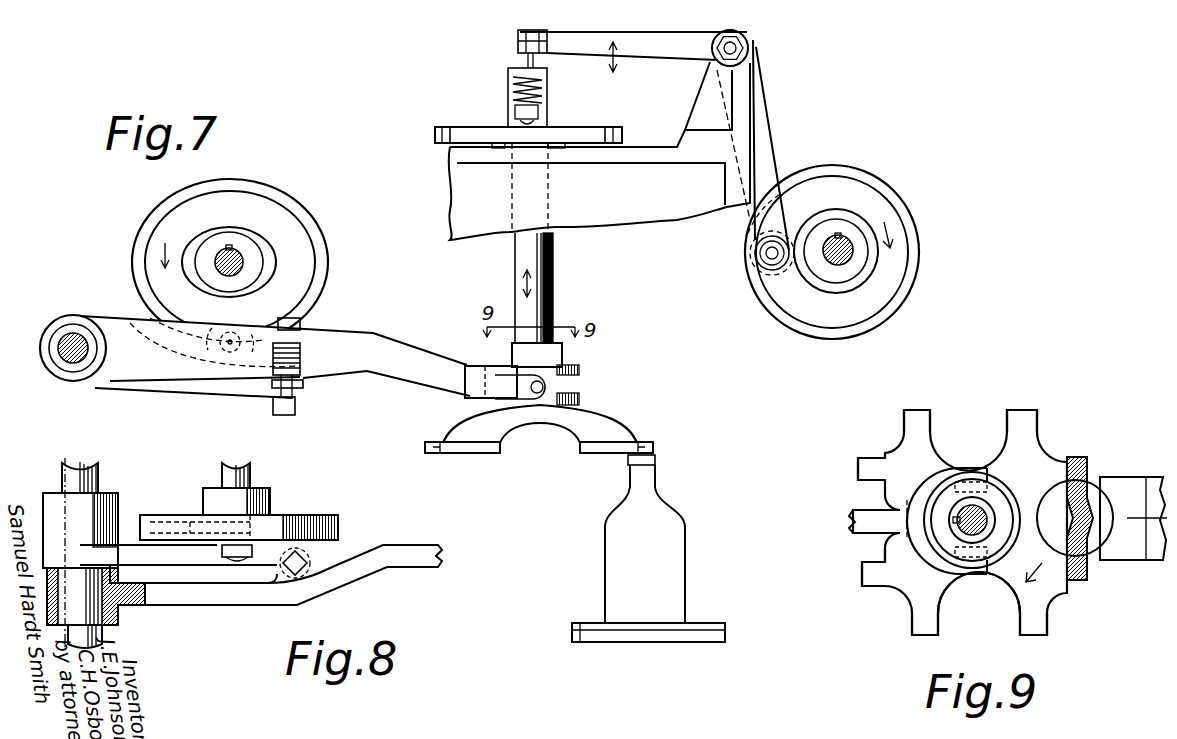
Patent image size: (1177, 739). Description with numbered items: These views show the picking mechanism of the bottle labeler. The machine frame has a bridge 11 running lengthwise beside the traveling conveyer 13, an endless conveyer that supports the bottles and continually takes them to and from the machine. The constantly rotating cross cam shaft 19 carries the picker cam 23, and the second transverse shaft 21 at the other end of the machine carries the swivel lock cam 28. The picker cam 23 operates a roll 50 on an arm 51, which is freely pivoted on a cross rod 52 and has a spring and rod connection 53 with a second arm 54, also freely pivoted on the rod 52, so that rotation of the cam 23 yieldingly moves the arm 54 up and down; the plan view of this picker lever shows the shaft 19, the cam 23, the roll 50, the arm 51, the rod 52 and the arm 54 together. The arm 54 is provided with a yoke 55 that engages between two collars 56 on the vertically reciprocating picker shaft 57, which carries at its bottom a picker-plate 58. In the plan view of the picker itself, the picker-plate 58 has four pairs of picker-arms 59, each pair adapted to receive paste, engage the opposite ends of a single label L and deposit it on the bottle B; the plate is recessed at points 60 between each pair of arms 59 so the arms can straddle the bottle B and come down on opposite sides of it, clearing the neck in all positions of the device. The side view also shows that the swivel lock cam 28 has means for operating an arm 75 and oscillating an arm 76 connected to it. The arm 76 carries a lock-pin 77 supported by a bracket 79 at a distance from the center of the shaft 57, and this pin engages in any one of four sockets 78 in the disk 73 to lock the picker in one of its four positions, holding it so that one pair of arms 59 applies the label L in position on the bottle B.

In FIG. 7, the bridge 11 is at (460, 197).
In FIG. 7, the traveling conveyer 13 is at (630, 640).
In FIG. 9, the traveling conveyer 13 is at (1096, 560).
In FIG. 7, the cross cam shaft 19 is at (243, 257).
In FIG. 8, the cross cam shaft 19 is at (250, 472).
In FIG. 7, the second transverse shaft 21 is at (852, 258).
In FIG. 7, the picker cam 23 is at (309, 227).
In FIG. 8, the picker cam 23 is at (302, 516).
In FIG. 7, the swivel lock cam 28 is at (892, 310).
In FIG. 7, the roll 50 is at (226, 360).
In FIG. 8, the roll 50 is at (210, 530).
In FIG. 7, the arm 51 is at (165, 388).
In FIG. 8, the arm 51 is at (162, 563).
In FIG. 7, the cross rod 52 is at (66, 366).
In FIG. 8, the cross rod 52 is at (98, 473).
In FIG. 7, the spring and rod connection 53 is at (304, 380).
In FIG. 7, the arm 54 is at (397, 376).
In FIG. 8, the arm 54 is at (402, 545).
In FIG. 9, the arm 54 is at (853, 518).
In FIG. 7, the yoke 55 is at (475, 367).
In FIG. 9, the yoke 55 is at (922, 560).
In FIG. 7, the collars 56 is at (575, 389).
In FIG. 7, the picker shaft 57 is at (553, 298).
In FIG. 9, the picker shaft 57 is at (990, 534).
In FIG. 7, the picker-plate 58 is at (578, 432).
In FIG. 9, the picker-plate 58 is at (971, 462).
In FIG. 7, the picker-arms 59 is at (483, 455).
In FIG. 9, the picker-arms 59 is at (916, 410).
In FIG. 9, the recesses 60 is at (898, 543).
In FIG. 7, the disk 73 is at (437, 138).
In FIG. 7, the arm 75 is at (767, 158).
In FIG. 7, the arm 76 is at (652, 38).
In FIG. 7, the lock-pin 77 is at (524, 60).
In FIG. 7, the sockets 78 is at (526, 119).
In FIG. 7, the bracket 79 is at (508, 100).
In FIG. 7, the bottle B is at (610, 565).
In FIG. 9, the bottle B is at (1050, 490).
In FIG. 9, the label L is at (1090, 478).